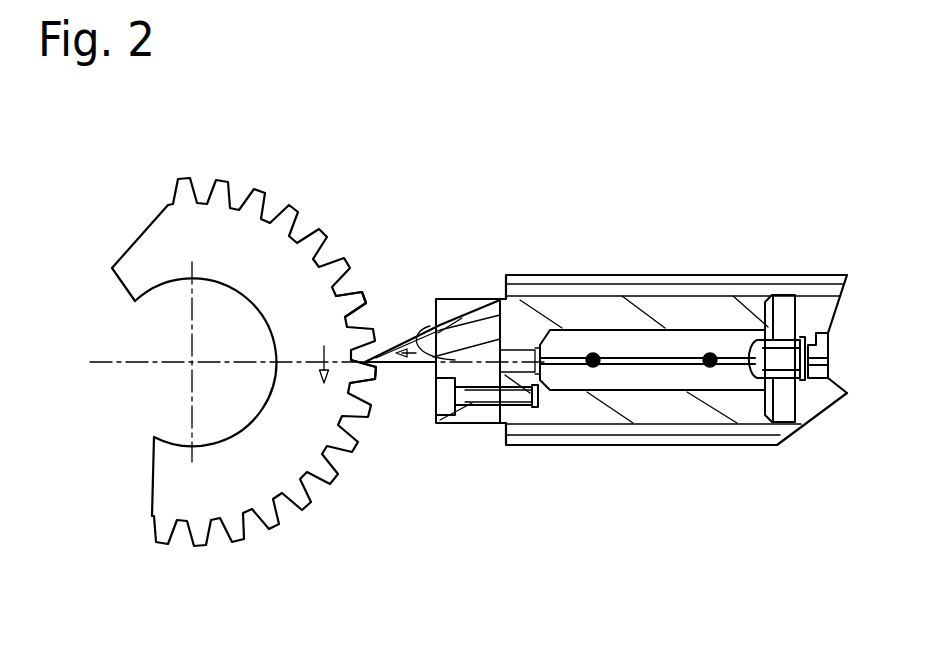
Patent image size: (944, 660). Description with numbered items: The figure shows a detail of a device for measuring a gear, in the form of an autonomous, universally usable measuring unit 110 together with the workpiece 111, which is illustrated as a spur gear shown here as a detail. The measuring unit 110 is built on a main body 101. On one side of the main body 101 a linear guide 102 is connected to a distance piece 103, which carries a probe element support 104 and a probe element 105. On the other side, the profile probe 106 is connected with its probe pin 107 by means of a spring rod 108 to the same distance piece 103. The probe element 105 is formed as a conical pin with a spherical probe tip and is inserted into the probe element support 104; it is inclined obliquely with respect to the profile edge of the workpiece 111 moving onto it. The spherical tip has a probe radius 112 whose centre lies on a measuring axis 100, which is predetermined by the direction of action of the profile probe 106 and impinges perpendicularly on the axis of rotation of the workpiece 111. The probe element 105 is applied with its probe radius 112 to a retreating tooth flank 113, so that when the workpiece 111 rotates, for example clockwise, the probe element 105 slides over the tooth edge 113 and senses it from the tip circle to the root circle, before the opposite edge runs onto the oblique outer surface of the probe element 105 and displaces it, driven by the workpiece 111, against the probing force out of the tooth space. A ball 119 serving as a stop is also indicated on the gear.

The measuring axis 100 is at (288, 345).
The main body 101 is at (688, 453).
The linear guide 102 is at (782, 292).
The distance piece 103 is at (601, 426).
The probe element support 104 is at (481, 435).
The probe element 105 is at (447, 327).
The profile probe 106 is at (823, 396).
The probe pin 107 is at (763, 334).
The spring rod 108 is at (558, 339).
The measuring unit 110 is at (634, 259).
The workpiece 111 is at (207, 485).
The probe radius 112 is at (355, 381).
The rear edge 113 is at (368, 385).
The ball as stop 119 is at (343, 239).